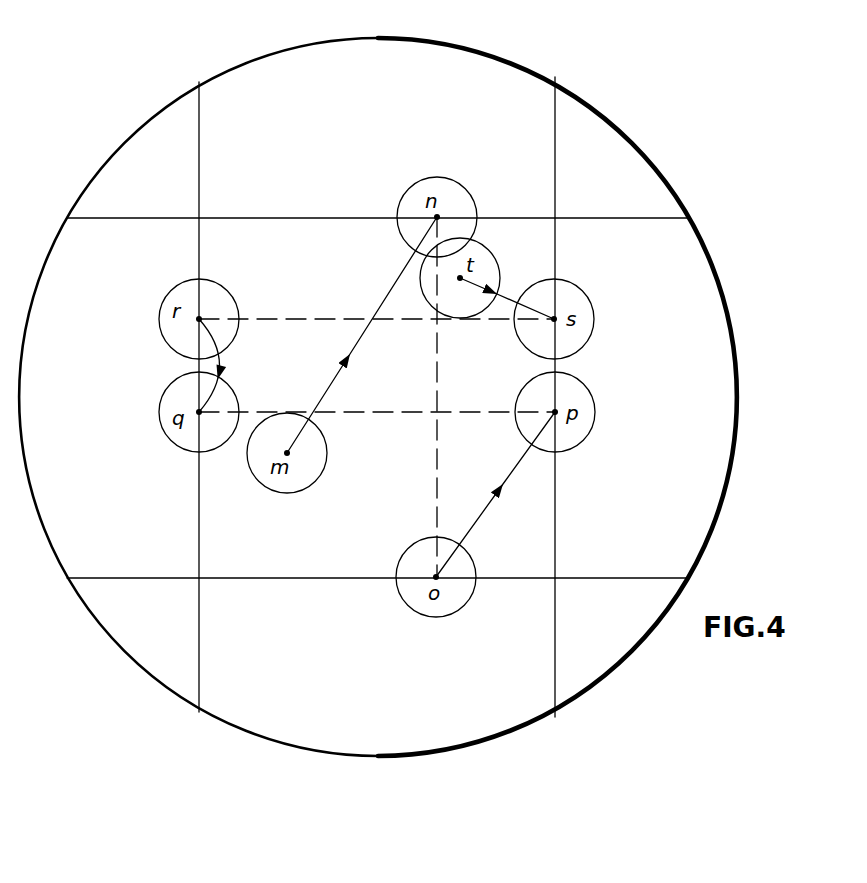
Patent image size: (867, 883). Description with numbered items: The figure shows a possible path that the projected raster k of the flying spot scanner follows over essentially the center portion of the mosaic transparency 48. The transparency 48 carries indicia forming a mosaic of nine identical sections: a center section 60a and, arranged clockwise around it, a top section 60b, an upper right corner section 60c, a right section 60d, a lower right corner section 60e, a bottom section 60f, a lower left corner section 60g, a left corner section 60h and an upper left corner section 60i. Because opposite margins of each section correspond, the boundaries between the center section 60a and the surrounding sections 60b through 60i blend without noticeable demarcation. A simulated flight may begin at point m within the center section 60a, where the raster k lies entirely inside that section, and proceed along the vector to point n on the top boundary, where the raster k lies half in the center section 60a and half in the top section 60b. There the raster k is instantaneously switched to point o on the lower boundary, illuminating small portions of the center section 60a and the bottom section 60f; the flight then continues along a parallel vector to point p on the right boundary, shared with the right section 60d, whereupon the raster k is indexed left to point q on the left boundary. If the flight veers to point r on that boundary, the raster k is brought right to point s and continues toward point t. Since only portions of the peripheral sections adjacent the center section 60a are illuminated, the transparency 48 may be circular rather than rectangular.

The transparency 48 is at (656, 145).
The center section 60a is at (309, 253).
The top section 60b is at (356, 86).
The upper right corner section 60c is at (593, 177).
The right section 60d is at (657, 429).
The lower right corner section 60e is at (599, 612).
The bottom section 60f is at (372, 684).
The lower left corner section 60g is at (141, 619).
The left corner section 60h is at (81, 413).
The upper left corner section 60i is at (137, 177).
The projected raster k is at (470, 228).